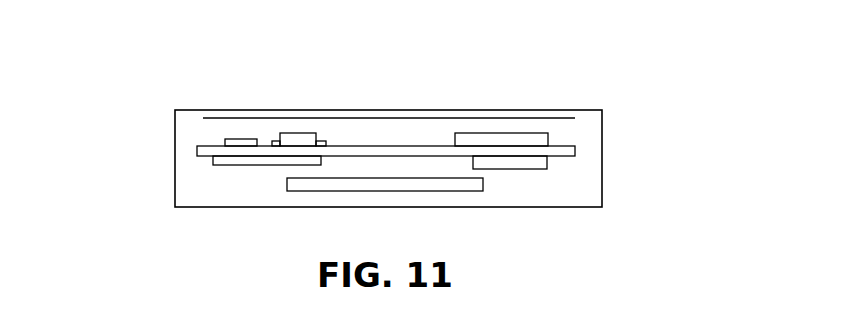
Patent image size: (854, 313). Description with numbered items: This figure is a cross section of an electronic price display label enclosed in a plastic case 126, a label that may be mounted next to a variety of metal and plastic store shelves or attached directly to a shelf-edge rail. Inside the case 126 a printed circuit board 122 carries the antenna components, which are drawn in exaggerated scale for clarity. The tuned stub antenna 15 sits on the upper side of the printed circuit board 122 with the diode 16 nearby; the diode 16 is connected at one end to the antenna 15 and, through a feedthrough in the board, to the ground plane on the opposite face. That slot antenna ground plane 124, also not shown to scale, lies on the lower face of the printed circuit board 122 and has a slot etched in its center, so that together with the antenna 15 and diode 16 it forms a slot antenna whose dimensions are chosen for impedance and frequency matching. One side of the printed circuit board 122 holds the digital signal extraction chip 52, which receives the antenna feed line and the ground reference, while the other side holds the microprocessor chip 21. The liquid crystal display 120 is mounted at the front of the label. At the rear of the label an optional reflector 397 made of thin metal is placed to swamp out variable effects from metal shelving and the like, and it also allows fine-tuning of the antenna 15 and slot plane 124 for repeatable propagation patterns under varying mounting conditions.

The antenna 15 is at (241, 139).
The diode 16 is at (297, 133).
The printed circuit board 122 is at (378, 147).
The digital signal extraction chip 52 is at (503, 133).
The reflector 397 is at (550, 118).
The plastic case 126 is at (603, 138).
The microprocessor chip 21 is at (549, 163).
The slot antenna ground plane 124 is at (230, 163).
The liquid crystal display 120 is at (453, 186).